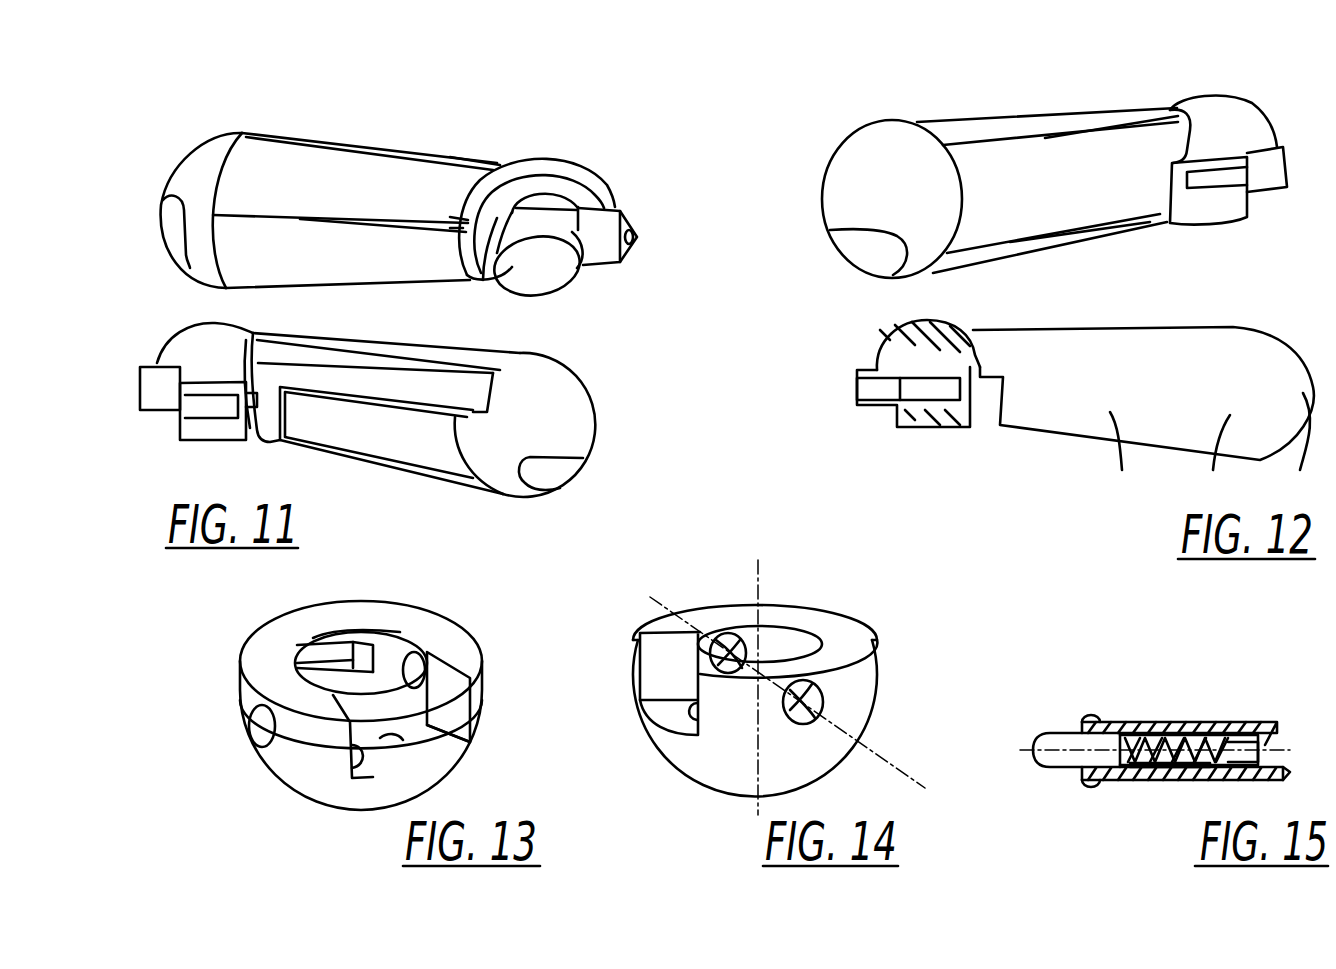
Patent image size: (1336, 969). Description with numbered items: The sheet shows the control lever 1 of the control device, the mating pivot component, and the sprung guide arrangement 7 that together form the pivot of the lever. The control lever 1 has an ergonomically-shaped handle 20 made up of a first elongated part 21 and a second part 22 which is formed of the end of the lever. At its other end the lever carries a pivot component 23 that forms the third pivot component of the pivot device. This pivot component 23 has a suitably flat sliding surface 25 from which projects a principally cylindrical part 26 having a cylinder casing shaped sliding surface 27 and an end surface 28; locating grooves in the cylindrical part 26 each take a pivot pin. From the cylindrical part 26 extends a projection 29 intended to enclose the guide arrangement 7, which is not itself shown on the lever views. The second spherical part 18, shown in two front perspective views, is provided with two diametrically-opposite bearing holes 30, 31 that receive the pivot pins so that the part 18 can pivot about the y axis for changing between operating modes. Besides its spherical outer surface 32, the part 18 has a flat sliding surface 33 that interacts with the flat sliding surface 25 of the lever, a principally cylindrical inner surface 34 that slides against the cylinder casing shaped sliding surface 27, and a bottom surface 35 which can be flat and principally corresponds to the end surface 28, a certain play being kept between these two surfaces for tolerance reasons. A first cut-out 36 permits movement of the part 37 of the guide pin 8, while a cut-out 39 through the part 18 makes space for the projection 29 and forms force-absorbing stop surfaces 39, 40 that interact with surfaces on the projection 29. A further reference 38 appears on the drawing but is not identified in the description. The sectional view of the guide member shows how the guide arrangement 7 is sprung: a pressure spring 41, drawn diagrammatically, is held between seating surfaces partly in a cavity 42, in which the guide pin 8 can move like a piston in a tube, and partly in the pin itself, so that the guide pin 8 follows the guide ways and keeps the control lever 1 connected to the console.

In FIG. 11, the control lever 1 is at (257, 129).
In FIG. 12, the control lever 1 is at (1010, 438).
In FIG. 15, the guide arrangement 7 is at (1078, 782).
In FIG. 15, the guide pin 8 is at (1060, 743).
In FIG. 13, the second spherical part 18 is at (247, 751).
In FIG. 12, the handle 20 is at (1213, 458).
In FIG. 12, the first elongated part 21 is at (1121, 457).
In FIG. 12, the second part 22 is at (1299, 447).
In FIG. 11, the pivot component 23 is at (571, 154).
In FIG. 12, the pivot component 23 is at (915, 432).
In FIG. 11, the flat sliding surface 25 is at (512, 165).
In FIG. 11, the cylindrical part 26 is at (548, 206).
In FIG. 15, the cylindrical part 26 is at (1125, 735).
In FIG. 11, the cylinder casing shaped sliding surface 27 is at (585, 265).
In FIG. 11, the end surface 28 is at (540, 290).
In FIG. 11, the projection 29 is at (600, 225).
In FIG. 13, the bearing hole 30 is at (255, 725).
In FIG. 13, the bearing hole 31 is at (424, 655).
In FIG. 13, the spherical outer surface 32 is at (300, 780).
In FIG. 13, the flat sliding surface 33 is at (275, 646).
In FIG. 13, the cylindrical inner surface 34 is at (372, 642).
In FIG. 13, the bottom surface 35 is at (410, 735).
In FIG. 13, the first cut-out 36 is at (330, 640).
In FIG. 14, the part of the guide pin 37 is at (758, 572).
In FIG. 15, the part of the guide pin 37 is at (1215, 745).
In FIG. 14, the transverse axis 38 is at (905, 775).
In FIG. 13, the cut-out 39 is at (468, 742).
In FIG. 13, the stop surface 40 is at (447, 708).
In FIG. 15, the pressure spring 41 is at (1165, 735).
In FIG. 12, the cavity 42 is at (890, 405).
In FIG. 15, the cavity 42 is at (1170, 768).